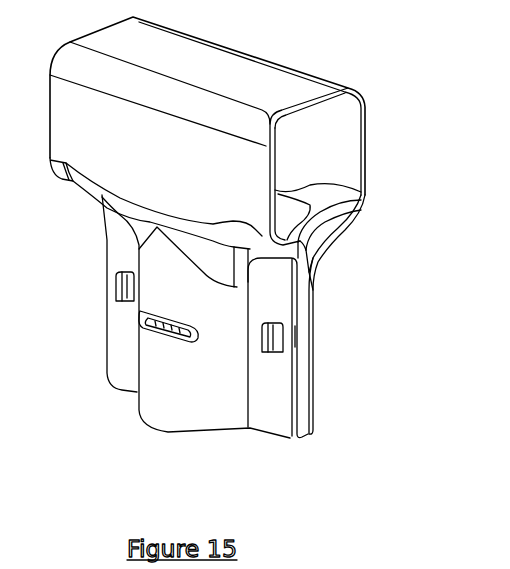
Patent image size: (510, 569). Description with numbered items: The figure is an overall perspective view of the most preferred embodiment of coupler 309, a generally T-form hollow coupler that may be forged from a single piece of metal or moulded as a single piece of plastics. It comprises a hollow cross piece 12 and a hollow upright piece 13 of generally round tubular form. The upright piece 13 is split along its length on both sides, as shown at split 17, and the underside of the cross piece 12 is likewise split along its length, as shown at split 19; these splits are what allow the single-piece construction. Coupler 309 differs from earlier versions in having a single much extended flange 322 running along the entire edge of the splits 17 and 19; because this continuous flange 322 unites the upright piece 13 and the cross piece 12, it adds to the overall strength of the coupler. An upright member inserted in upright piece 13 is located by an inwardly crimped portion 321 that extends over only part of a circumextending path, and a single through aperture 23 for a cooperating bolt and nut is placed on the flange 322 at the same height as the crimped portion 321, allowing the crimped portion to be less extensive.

The hollow cross piece 12 is at (245, 75).
The hollow upright piece 13 is at (163, 387).
The split 17 is at (310, 435).
The split 19 is at (297, 233).
The through aperture 23 is at (116, 283).
The coupler 309 is at (335, 254).
The inwardly crimped portion 321 is at (181, 334).
The extended flange 322 is at (273, 300).